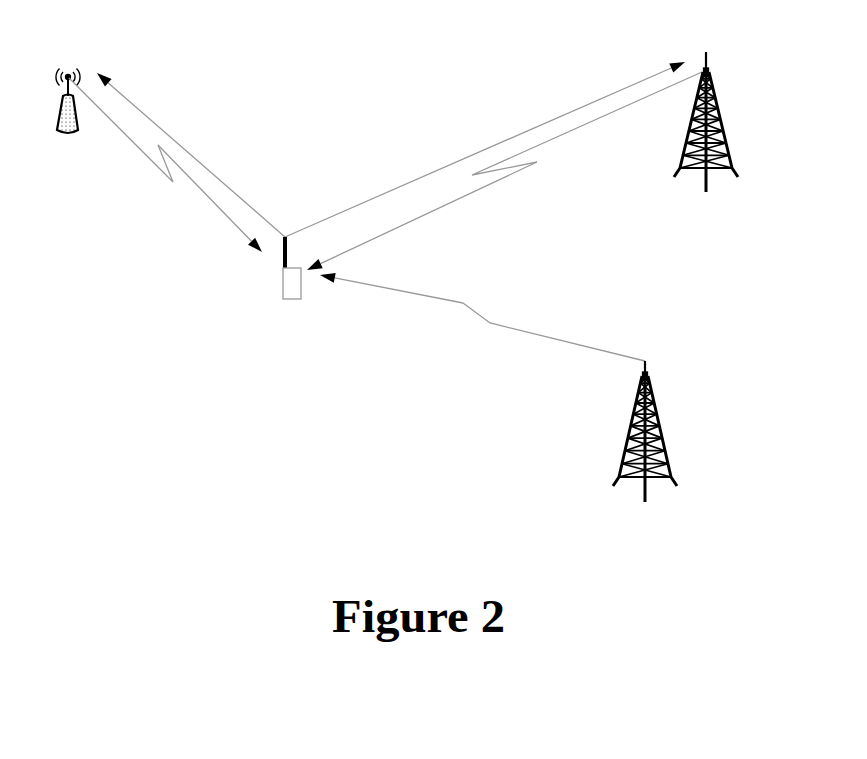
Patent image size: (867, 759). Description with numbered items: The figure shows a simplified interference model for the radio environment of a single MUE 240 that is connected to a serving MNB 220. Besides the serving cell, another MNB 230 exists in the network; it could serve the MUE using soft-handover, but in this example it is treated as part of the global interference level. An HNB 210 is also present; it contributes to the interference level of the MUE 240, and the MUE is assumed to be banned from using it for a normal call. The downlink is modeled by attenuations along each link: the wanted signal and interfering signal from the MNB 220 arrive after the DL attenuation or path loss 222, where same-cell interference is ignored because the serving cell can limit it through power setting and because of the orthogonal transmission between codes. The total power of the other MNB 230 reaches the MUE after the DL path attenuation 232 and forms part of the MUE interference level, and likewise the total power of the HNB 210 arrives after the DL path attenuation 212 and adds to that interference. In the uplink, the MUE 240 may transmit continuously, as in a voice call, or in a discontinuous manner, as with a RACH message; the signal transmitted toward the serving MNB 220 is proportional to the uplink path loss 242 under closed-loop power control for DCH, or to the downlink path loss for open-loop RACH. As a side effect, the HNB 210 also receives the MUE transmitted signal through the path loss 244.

The HNB 210 is at (65, 149).
The DL path attenuation 212 is at (193, 196).
The MNB 220 is at (686, 186).
The DL attenuation 222 is at (494, 196).
The other MNB 230 is at (609, 460).
The DL path attenuation 232 is at (458, 335).
The MUE 240 is at (290, 314).
The uplink path loss 242 is at (408, 169).
The path loss 244 is at (207, 150).